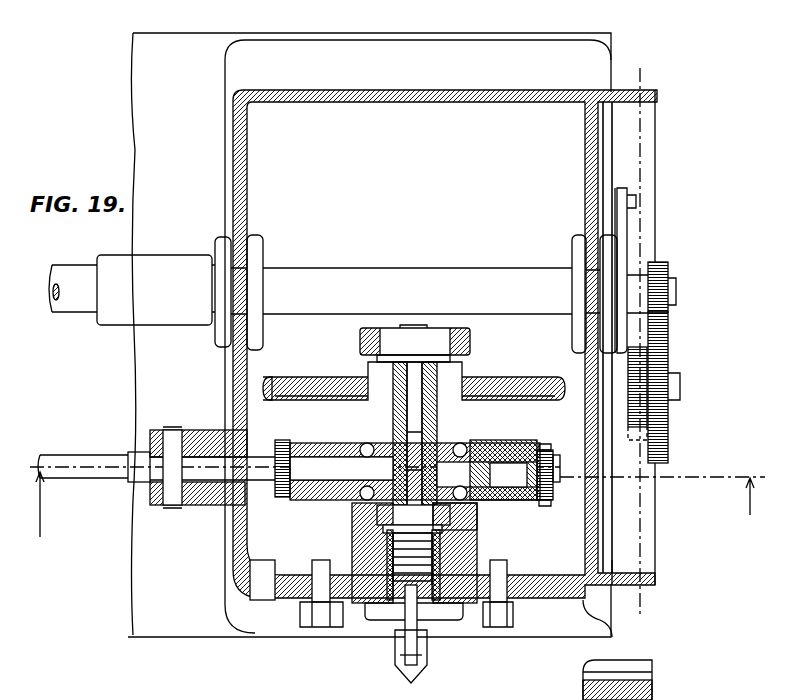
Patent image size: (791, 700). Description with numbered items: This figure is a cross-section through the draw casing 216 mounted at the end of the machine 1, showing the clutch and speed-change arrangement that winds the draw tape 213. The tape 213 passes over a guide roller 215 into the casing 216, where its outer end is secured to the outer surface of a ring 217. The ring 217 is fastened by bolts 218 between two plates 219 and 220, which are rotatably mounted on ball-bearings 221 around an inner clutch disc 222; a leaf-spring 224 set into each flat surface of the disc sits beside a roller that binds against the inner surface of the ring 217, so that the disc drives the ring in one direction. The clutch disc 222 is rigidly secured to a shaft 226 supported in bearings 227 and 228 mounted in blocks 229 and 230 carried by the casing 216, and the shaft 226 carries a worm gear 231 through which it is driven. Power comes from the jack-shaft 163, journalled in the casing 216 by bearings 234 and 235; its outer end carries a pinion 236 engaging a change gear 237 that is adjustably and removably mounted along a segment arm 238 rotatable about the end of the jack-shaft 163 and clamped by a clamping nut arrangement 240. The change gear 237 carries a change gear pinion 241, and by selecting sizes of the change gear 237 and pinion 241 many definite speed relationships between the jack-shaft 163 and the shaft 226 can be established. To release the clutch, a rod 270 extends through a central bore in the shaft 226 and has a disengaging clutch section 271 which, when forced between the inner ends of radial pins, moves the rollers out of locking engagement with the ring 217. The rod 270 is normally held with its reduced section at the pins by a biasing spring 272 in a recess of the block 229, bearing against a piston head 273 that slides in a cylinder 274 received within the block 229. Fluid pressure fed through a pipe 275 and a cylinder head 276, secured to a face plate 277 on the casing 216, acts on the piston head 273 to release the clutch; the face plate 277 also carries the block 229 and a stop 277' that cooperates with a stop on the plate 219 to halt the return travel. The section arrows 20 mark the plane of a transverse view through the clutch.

The wall panel 1 is at (150, 104).
The draw casing 216 is at (358, 88).
The bearing 234 is at (262, 233).
The jack-shaft 163 is at (343, 272).
The bearing 228 is at (447, 330).
The bearing 235 is at (575, 250).
The clamping nut arrangement 240 is at (636, 195).
The segment arm 238 is at (637, 233).
The pinion 236 is at (660, 262).
The change gear 237 is at (668, 355).
The change gear pinion 241 is at (668, 432).
The block 230 is at (360, 340).
The worm gear 231 is at (265, 385).
The shaft 226 is at (466, 377).
The ring 217 is at (240, 468).
The bolts 218 is at (247, 428).
The plate 220 is at (322, 444).
The ball-bearings 221 is at (362, 442).
The rod 270 is at (413, 450).
The disengaging clutch section 271 is at (455, 445).
The inner clutch disc 222 is at (488, 447).
The guide roller 215 is at (148, 465).
The draw tape 213 is at (65, 480).
The leaf-spring 224 is at (572, 468).
The plate 219 is at (202, 588).
The block 229 is at (366, 540).
The bearing 227 is at (458, 525).
The cylinder 274 is at (432, 550).
The biasing spring 272 is at (458, 560).
The cylinder head 276 is at (395, 630).
The piston head 273 is at (425, 585).
The fluid pressure pipe 275 is at (428, 660).
The face plate 277 is at (535, 625).
The stop 277' is at (646, 587).
The section line 20- 20 is at (397, 518).